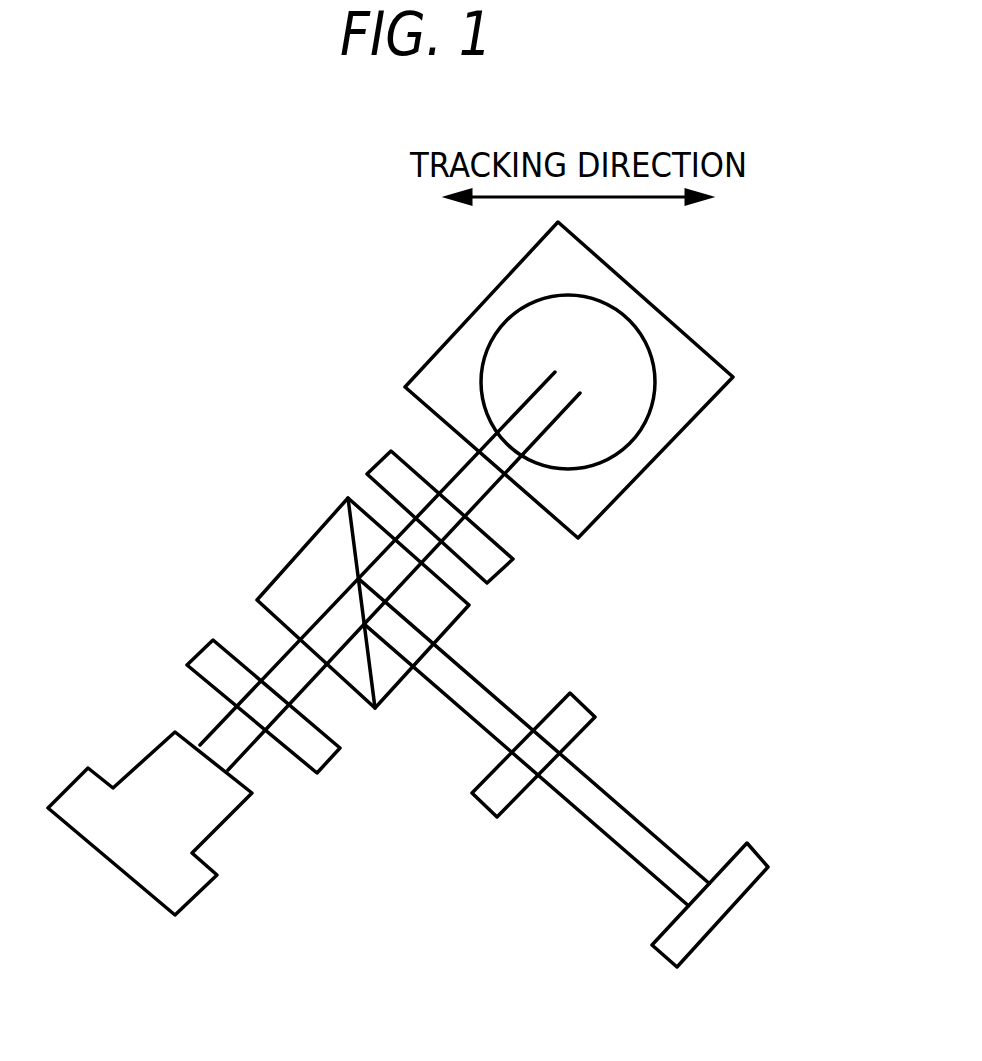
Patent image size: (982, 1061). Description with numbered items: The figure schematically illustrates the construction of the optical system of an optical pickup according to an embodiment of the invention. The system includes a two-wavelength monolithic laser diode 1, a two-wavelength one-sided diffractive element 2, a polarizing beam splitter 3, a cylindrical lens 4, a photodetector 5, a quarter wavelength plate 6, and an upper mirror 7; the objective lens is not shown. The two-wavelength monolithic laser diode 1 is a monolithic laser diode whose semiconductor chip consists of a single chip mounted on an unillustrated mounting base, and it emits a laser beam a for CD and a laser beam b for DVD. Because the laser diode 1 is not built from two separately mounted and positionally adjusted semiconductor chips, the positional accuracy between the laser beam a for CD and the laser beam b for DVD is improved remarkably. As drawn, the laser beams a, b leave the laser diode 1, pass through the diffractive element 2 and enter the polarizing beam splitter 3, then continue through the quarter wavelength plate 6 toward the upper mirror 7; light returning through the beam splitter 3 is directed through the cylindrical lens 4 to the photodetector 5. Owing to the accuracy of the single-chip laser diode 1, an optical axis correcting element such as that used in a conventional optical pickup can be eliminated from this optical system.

The two-wavelength monolithic laser diode 1 is at (197, 892).
The two-wavelength one-sided diffractive element 2 is at (322, 763).
The polarizing beam splitter 3 is at (297, 562).
The cylindrical lens 4 is at (592, 710).
The photodetector 5 is at (762, 857).
The quarter wavelength plate 6 is at (495, 578).
The upper mirror 7 is at (685, 332).
The laser beam for CD a is at (213, 730).
The laser beam for DVD b is at (247, 753).